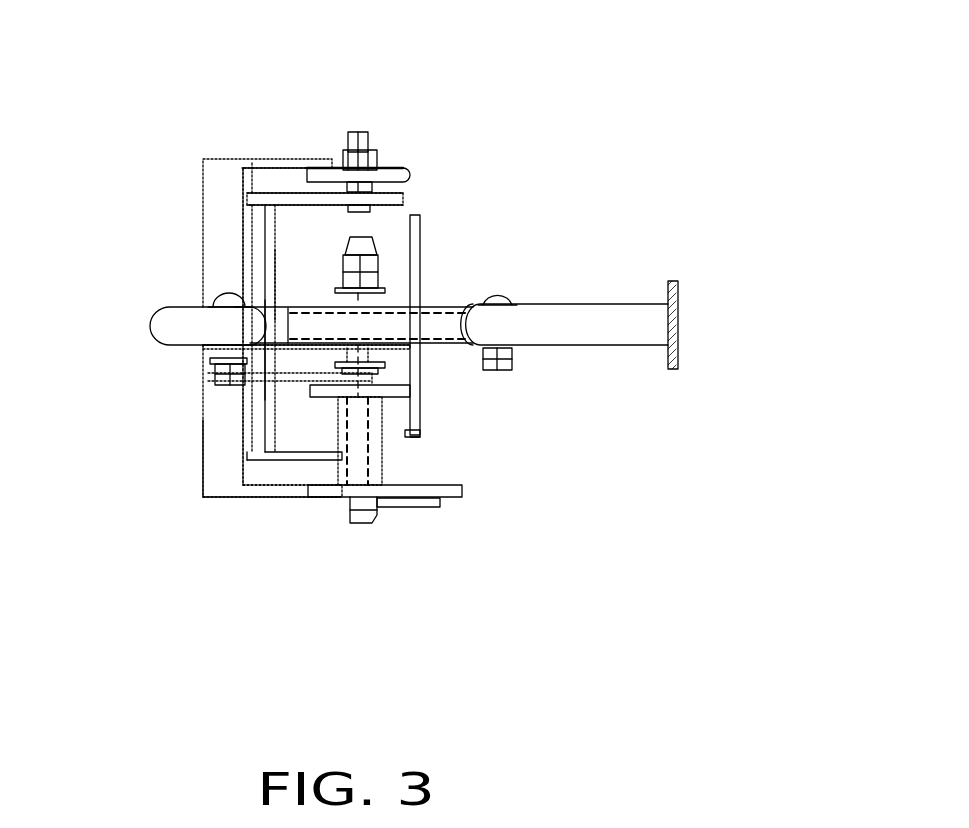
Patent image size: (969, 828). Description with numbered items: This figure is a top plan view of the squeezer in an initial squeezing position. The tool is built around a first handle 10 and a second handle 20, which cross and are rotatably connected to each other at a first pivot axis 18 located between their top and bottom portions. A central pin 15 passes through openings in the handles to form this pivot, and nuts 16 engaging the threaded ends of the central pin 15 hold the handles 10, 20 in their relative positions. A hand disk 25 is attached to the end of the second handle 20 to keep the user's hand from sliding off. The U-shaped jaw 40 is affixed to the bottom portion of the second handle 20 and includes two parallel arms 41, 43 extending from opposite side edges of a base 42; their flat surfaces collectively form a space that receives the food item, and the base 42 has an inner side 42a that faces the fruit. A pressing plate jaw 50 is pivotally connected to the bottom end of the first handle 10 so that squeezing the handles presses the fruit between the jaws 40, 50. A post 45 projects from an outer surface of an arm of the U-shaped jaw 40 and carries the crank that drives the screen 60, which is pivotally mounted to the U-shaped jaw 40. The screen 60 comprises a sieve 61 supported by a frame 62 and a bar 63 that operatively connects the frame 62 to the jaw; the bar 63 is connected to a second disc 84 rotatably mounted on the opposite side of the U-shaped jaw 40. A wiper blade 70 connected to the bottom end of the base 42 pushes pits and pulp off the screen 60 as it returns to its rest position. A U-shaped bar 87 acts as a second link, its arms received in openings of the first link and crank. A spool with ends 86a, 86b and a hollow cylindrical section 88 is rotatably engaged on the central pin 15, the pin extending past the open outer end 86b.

The first handle 10 is at (156, 313).
The central pin 15 is at (355, 458).
The nuts 16 is at (375, 522).
The first pivot axis 18 is at (367, 322).
The second handle 20 is at (607, 292).
The hand disk 25 is at (680, 323).
The U-shaped jaw 40 is at (260, 281).
The arm 41 is at (265, 462).
The base 42 is at (252, 202).
The inner side 42a is at (262, 219).
The arm 43 is at (292, 193).
The post 45 is at (368, 145).
The pressing plate jaw 50 is at (420, 245).
The screen 60 is at (203, 228).
The sieve 61 is at (203, 407).
The frame 62 is at (203, 467).
The bar 63 is at (282, 496).
The wiper blade 70 is at (275, 252).
The second disc 84 is at (410, 169).
The spool end 86a is at (410, 387).
The open outer end of the spool 86b is at (412, 480).
The U-shaped bar 87 is at (440, 505).
The hollow cylindrical section 88 is at (418, 432).